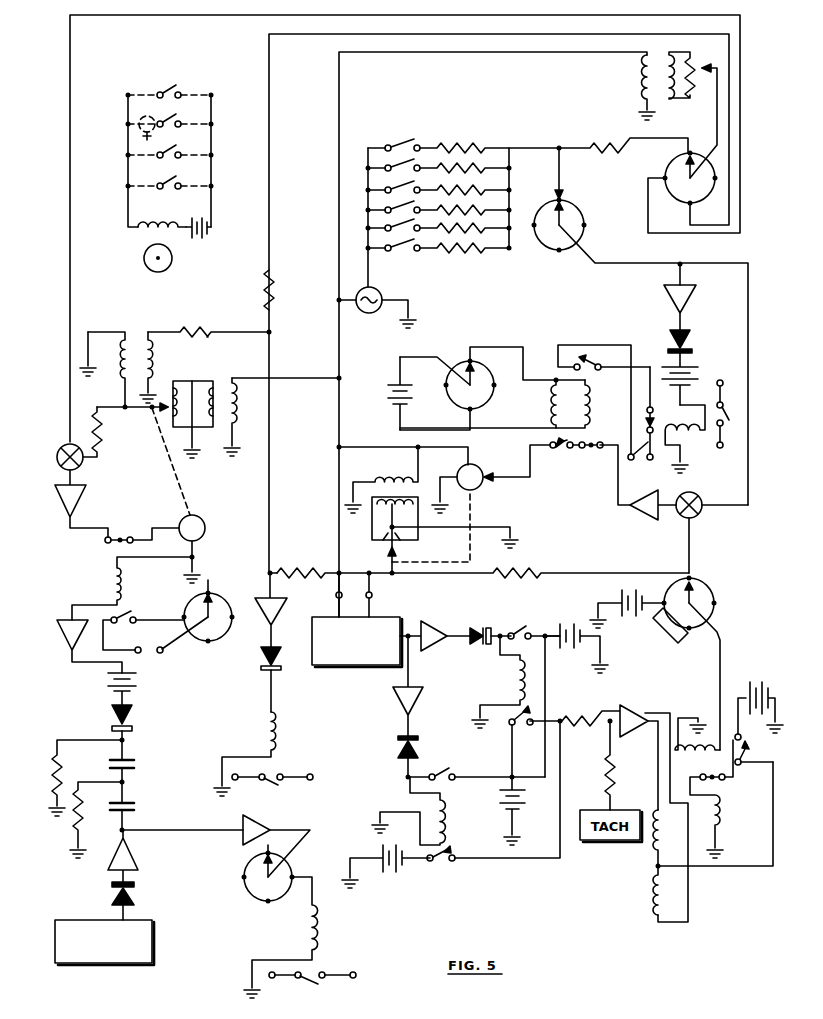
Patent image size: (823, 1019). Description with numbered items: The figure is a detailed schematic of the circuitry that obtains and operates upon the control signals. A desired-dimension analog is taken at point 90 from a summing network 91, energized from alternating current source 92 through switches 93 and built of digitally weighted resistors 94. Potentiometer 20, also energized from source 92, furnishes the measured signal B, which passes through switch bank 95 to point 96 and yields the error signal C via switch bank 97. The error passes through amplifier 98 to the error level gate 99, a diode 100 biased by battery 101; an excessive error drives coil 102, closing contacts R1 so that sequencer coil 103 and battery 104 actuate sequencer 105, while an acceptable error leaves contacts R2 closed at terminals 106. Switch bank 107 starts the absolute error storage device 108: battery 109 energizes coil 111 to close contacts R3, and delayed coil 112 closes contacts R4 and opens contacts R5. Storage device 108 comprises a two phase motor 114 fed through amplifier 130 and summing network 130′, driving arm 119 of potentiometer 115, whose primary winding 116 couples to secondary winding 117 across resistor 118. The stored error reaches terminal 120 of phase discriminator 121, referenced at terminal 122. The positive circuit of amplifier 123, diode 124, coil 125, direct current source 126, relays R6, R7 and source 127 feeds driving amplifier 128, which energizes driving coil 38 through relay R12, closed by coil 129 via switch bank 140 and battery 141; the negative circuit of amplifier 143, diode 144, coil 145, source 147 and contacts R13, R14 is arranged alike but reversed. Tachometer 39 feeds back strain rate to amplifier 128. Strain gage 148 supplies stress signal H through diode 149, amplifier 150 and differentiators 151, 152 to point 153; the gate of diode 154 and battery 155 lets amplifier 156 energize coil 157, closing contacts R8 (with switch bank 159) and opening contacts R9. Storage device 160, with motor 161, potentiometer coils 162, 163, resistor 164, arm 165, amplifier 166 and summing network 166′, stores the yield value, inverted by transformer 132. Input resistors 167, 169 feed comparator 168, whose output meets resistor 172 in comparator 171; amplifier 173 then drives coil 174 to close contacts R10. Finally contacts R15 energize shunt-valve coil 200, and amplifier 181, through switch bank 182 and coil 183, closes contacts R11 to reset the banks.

The potentiometer 20 is at (648, 61).
The driving coil 38 is at (655, 888).
The tachometer 39 is at (598, 812).
The point 90 is at (528, 186).
The summing network 91 is at (395, 146).
The alternating current source 92 is at (380, 288).
The switches 93 is at (412, 242).
The resistors 94 is at (478, 192).
The switch bank 95 is at (672, 167).
The point 96 is at (620, 138).
The switch bank 97 is at (575, 212).
The amplifier 98 is at (690, 298).
The error level gate 99 is at (695, 349).
The diode 100 is at (688, 338).
The battery 101 is at (697, 375).
The coil 102 is at (690, 438).
The sequencer coil 103 is at (148, 230).
The battery 104 is at (206, 230).
The sequencer 105 is at (172, 258).
The terminals 106 is at (606, 413).
The stepping switch bank 107 is at (460, 368).
The absolute error storage device 108 is at (387, 448).
The battery 109 is at (398, 386).
The coil 111 is at (552, 405).
The relay coil 112 is at (590, 404).
The two phase motor 114 is at (471, 488).
The potentiometer 115 is at (421, 493).
The primary winding 116 is at (381, 480).
The secondary winding 117 is at (382, 510).
The resistor 118 is at (399, 539).
The movable arm 119 is at (390, 562).
The terminal 120 is at (372, 595).
The phase discriminator 121 is at (360, 665).
The terminal 122 is at (336, 595).
The amplifier 123 is at (437, 623).
The diode 124 is at (478, 626).
The coil 125 is at (498, 681).
The direct current source 126 is at (564, 624).
The source 127 is at (500, 800).
The driving amplifier 128 is at (634, 708).
The coil 129 is at (697, 746).
The amplifier 130 is at (638, 493).
The summing network 130' is at (712, 524).
The transformer 132 is at (136, 340).
The switch bank 140 is at (706, 593).
The battery 141 is at (626, 596).
The amplifier 143 is at (402, 702).
The diode 144 is at (398, 740).
The coil 145 is at (448, 822).
The source 147 is at (394, 866).
The strain gage 148 is at (55, 947).
The diode 149 is at (132, 895).
The amplifier 150 is at (112, 868).
The differentiator 151 is at (130, 799).
The differentiator 152 is at (136, 757).
The point 153 is at (132, 731).
The diode 154 is at (130, 714).
The battery 155 is at (112, 683).
The amplifier 156 is at (64, 654).
The coil 157 is at (112, 586).
The switch bank 159 is at (236, 636).
The measured value complement storage device 160 is at (176, 458).
The motor 161 is at (204, 530).
The potentiometer coil 162 is at (238, 410).
The potentiometer coil 163 is at (215, 383).
The resistor 164 is at (177, 383).
The potentiometer arm 165 is at (135, 410).
The amplifier 166 is at (59, 490).
The feed back summing network 166' is at (109, 441).
The input resistor 167 is at (275, 287).
The summing network 168 is at (248, 313).
The input resistor 169 is at (208, 321).
The summing network 171 is at (273, 570).
The input resistor 172 is at (298, 570).
The amplifier 173 is at (283, 605).
The coil 174 is at (276, 712).
The amplifier 181 is at (262, 818).
The switch bank 182 is at (286, 866).
The coil 183 is at (318, 927).
The shunt-valve coil 200 is at (722, 812).
The relay contacts R1 is at (437, 260).
The relay contacts R2 is at (659, 410).
The relay contacts R3 is at (528, 459).
The relay contacts R4 is at (612, 358).
The relay contacts R5 is at (588, 460).
The relay R6 is at (534, 624).
The relay R7 is at (527, 706).
The relay contacts R8 is at (158, 377).
The relay contacts R9 is at (142, 528).
The relay contacts R10 is at (220, 458).
The relay contacts R11 is at (241, 583).
The relay R12 is at (759, 723).
The relay contacts R13 is at (476, 766).
The relay contacts R14 is at (493, 805).
The contacts R15 is at (728, 774).